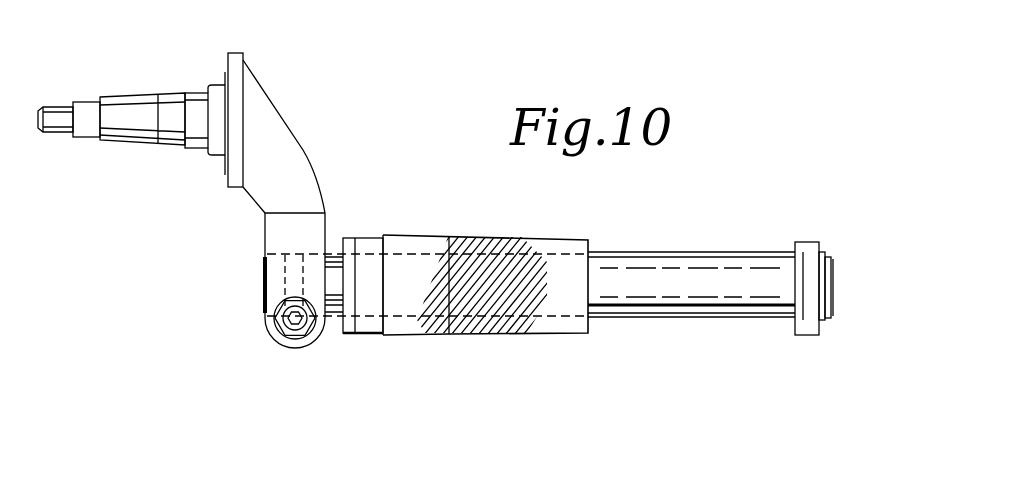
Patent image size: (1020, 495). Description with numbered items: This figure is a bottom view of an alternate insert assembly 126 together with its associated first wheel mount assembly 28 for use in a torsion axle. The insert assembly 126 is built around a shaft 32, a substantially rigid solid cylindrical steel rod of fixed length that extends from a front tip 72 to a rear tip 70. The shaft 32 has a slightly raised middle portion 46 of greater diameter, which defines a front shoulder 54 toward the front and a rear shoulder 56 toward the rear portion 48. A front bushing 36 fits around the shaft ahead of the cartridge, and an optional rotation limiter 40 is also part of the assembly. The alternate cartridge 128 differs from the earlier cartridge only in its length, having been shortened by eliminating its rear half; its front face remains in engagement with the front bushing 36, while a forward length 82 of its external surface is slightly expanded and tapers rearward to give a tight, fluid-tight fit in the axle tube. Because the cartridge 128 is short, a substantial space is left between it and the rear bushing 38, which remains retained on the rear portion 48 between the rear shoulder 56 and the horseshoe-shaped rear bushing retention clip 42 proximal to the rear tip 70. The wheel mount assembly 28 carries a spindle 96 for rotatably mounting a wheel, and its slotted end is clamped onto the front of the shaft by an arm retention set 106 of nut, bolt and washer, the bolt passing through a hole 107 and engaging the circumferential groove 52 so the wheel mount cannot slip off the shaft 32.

The spindle 96 is at (120, 115).
The first wheel mount assembly 28 is at (272, 127).
The circumferential groove 52 is at (298, 260).
The front tip 72 is at (263, 283).
The arm retention set 106 is at (280, 328).
The hole 107 is at (292, 347).
The rotation limiter 40 is at (348, 335).
The front bushing 36 is at (350, 411).
The front shoulder 54 is at (378, 251).
The middle portion 46 is at (565, 250).
The forward length 82 is at (402, 335).
The alternate cartridge 128 is at (482, 333).
The alternate insert assembly 126 is at (703, 252).
The shaft 32 is at (687, 317).
The rear bushing 38 is at (807, 328).
The rear shoulder 56 is at (805, 263).
The rear portion 48 is at (823, 250).
The rear bushing retention clip 42 is at (827, 257).
The rear tip 70 is at (833, 282).